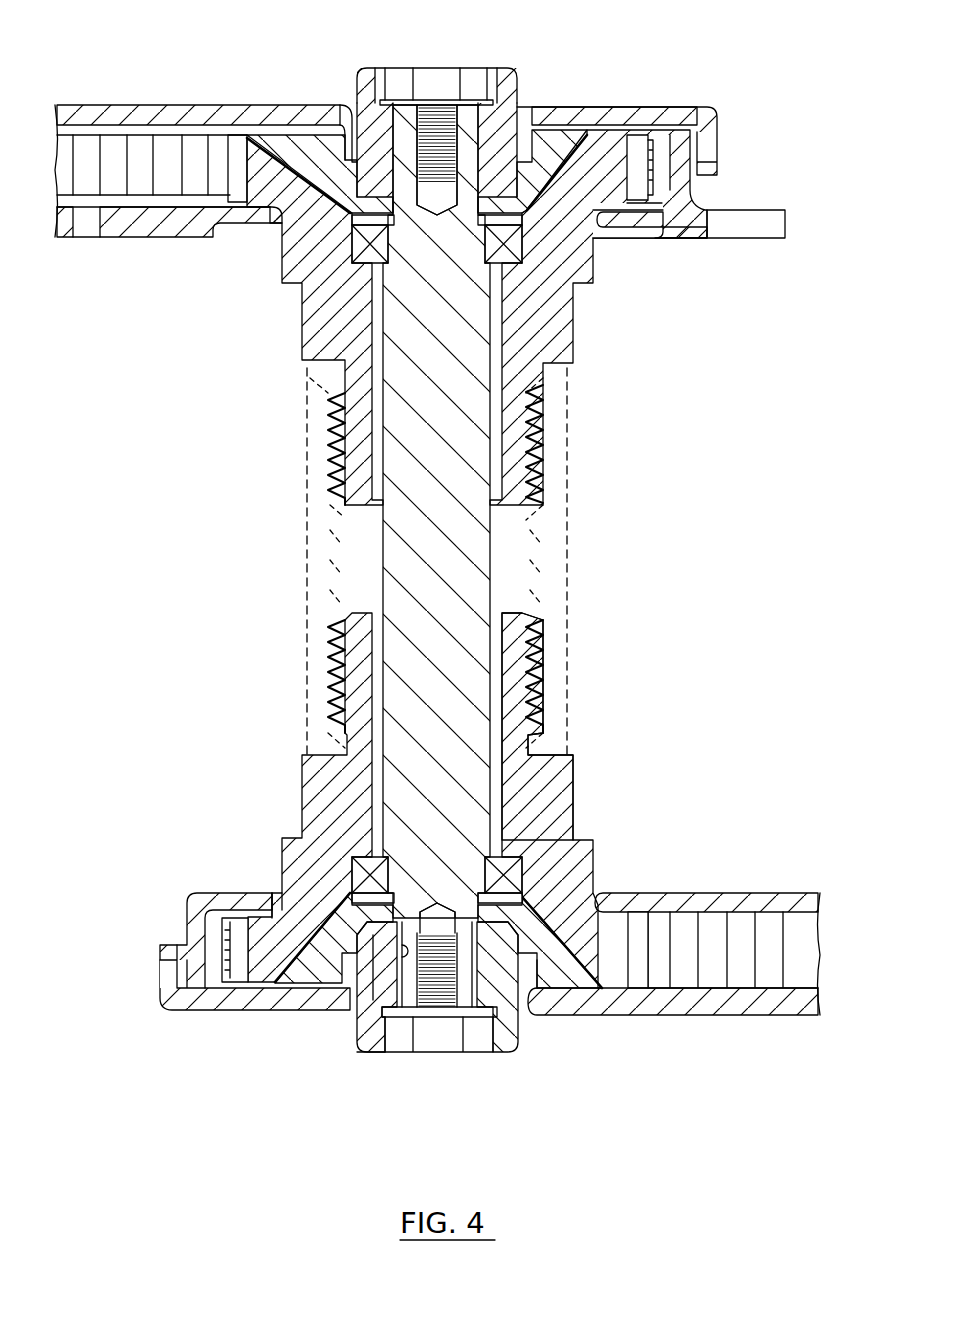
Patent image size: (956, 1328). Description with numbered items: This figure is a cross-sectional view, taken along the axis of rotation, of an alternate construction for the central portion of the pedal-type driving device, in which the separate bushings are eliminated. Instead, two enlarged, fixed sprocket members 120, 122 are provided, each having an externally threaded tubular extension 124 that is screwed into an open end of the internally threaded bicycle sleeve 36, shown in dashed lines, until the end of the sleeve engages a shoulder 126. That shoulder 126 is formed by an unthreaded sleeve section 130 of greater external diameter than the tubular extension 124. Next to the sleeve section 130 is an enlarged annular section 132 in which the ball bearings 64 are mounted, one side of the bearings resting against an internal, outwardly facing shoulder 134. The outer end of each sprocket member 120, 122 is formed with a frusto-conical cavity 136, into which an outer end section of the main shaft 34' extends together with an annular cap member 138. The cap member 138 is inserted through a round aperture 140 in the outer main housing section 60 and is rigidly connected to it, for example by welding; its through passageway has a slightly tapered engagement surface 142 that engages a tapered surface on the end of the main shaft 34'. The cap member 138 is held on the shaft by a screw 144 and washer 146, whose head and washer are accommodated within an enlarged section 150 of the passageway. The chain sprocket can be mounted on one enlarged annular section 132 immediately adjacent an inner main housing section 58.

The main shaft 34' is at (512, 511).
The bicycle sleeve 36 is at (545, 552).
The inner main housing section 58 is at (745, 893).
The outer main housing section 60 is at (750, 1002).
The ball bearings 64 is at (535, 268).
The fixed sprocket member 120 is at (565, 345).
The fixed sprocket member 122 is at (553, 795).
The tubular extension 124 is at (520, 475).
The shoulder 126 is at (323, 372).
The sleeve section 130 is at (565, 820).
The enlarged annular section 132 is at (577, 262).
The internal outwardly facing shoulder 134 is at (360, 855).
The frusto-conical cavity 136 is at (562, 140).
The annular cap member 138 is at (367, 1037).
The round aperture 140 is at (535, 972).
The tapered engagement surface 142 is at (395, 960).
The screw 144 is at (441, 1035).
The washer 146 is at (478, 1035).
The enlarged section of the through passageway 150 is at (381, 1045).